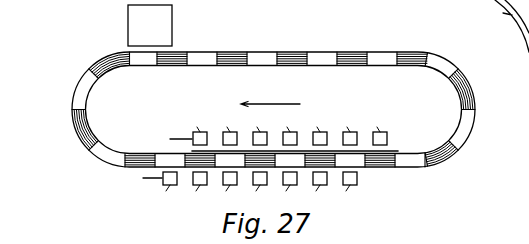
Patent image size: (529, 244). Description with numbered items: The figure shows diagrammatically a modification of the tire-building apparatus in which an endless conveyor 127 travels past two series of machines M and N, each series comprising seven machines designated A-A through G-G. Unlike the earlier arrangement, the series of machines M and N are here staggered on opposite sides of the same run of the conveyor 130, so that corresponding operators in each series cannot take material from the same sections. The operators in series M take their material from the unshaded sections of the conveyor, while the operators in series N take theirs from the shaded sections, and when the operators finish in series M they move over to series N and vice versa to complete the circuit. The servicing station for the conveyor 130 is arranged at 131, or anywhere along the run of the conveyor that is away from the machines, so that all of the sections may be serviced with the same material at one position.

The conveyor 127 is at (350, 53).
The conveyor 130 is at (266, 30).
The servicing station 131 is at (128, 24).
The series of machines M is at (273, 132).
The series of machines N is at (241, 187).